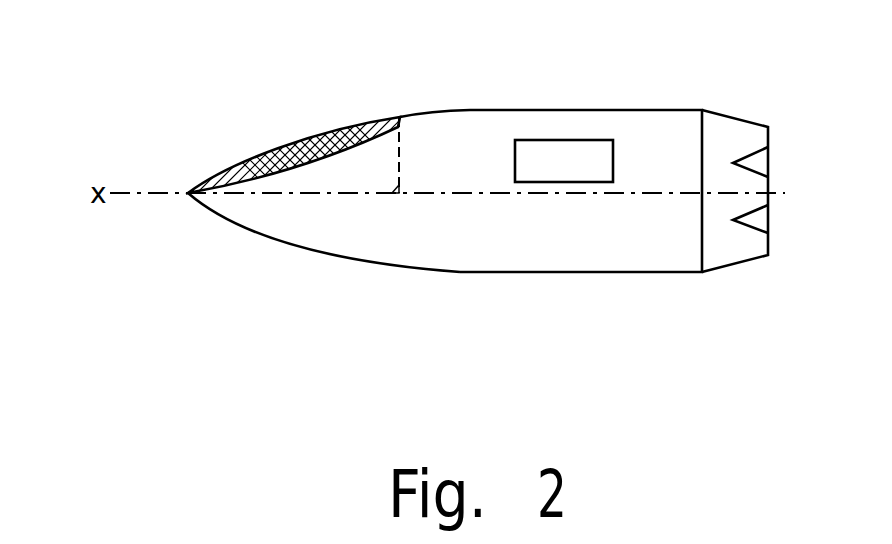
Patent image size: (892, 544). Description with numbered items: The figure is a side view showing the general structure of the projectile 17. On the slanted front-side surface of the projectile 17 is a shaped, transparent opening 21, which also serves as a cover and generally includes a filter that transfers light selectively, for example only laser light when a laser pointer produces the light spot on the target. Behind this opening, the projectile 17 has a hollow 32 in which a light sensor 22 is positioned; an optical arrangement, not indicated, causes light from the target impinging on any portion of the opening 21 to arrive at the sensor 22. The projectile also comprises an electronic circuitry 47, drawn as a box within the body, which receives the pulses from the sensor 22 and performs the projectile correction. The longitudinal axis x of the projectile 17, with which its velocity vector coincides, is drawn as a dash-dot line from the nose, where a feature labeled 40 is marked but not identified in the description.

The projectile 17 is at (530, 273).
The transparent opening 21 is at (280, 150).
The light sensor 22 is at (393, 187).
The hollow 32 is at (323, 170).
The nose tip / apex 40 is at (188, 193).
The electronic circuitry 47 is at (565, 150).